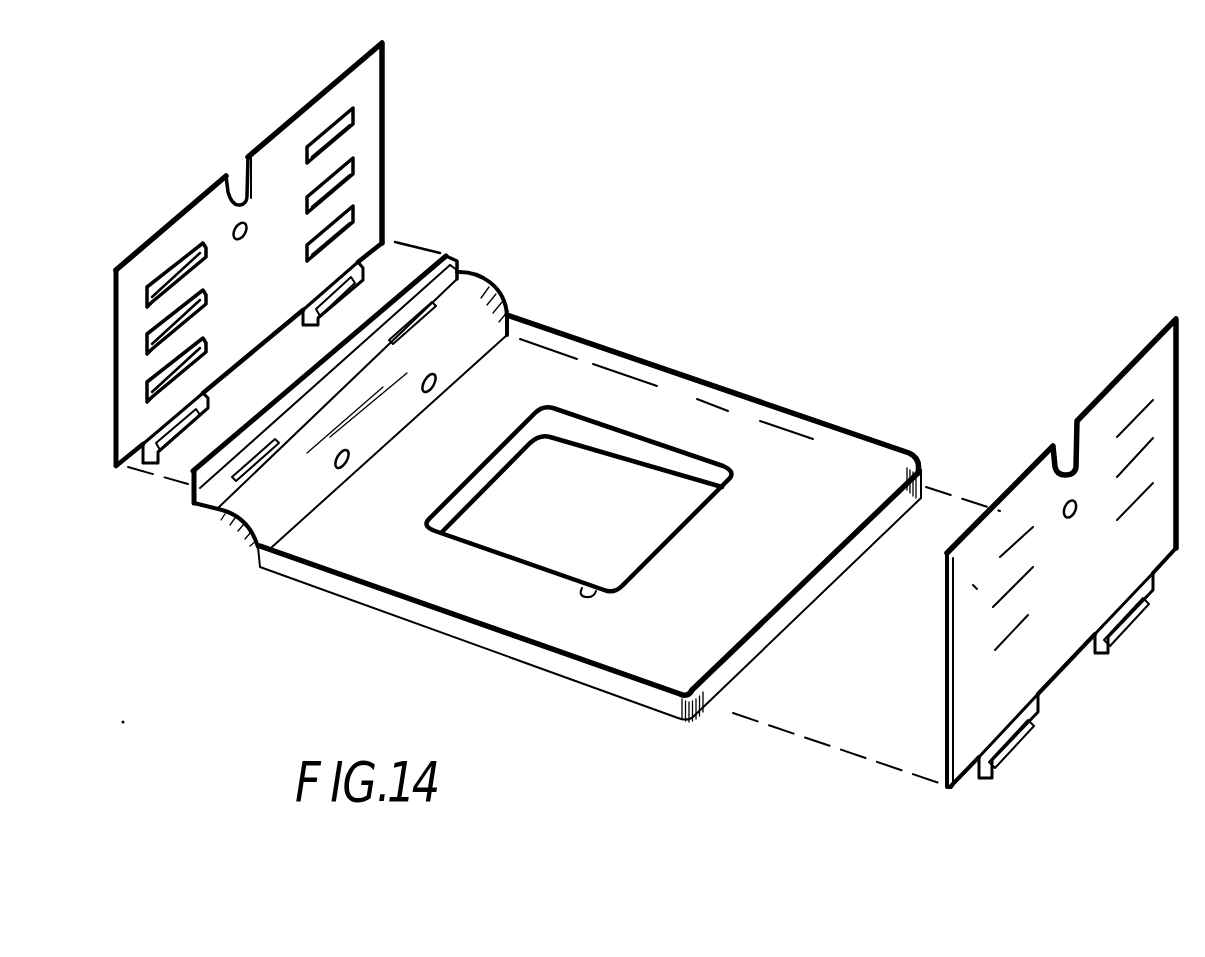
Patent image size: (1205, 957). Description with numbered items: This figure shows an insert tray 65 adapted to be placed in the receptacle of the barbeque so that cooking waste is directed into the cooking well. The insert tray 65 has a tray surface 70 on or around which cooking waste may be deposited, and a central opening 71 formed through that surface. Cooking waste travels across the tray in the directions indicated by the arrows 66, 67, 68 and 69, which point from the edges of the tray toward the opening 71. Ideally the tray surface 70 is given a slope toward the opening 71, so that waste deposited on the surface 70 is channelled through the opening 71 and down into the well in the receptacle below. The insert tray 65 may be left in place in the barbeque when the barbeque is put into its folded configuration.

The insert tray 65 is at (691, 291).
The arrow 66 is at (646, 625).
The arrow 67 is at (840, 473).
The arrow 68 is at (517, 352).
The arrow 69 is at (385, 532).
The tray surface 70 is at (780, 448).
The opening 71 is at (638, 492).